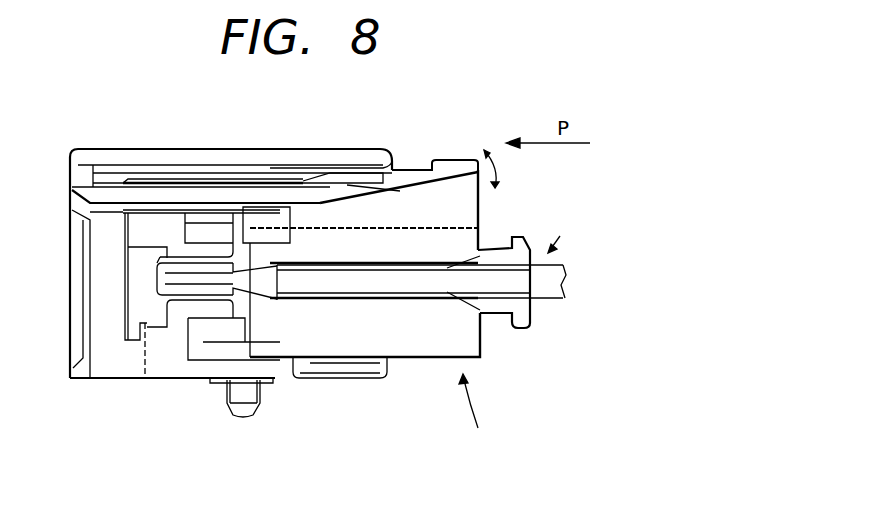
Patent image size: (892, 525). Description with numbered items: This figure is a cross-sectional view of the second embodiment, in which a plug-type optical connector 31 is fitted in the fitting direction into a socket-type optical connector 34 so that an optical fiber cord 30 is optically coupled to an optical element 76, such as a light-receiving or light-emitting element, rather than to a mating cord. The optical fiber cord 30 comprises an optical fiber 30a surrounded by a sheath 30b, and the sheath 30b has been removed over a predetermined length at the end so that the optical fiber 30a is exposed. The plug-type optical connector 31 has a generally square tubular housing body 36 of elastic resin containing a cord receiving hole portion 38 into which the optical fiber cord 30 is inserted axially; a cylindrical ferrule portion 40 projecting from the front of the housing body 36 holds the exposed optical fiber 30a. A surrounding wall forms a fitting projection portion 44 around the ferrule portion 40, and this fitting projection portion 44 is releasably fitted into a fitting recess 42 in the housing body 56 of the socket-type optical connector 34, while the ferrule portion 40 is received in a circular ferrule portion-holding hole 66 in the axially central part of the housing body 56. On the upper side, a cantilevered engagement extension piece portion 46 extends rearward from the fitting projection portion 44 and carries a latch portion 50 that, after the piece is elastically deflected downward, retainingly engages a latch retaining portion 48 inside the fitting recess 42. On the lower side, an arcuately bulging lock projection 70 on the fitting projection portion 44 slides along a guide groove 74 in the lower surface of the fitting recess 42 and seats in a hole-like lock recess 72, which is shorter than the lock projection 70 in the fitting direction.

The socket-type optical connector 34 is at (121, 141).
The housing body 56 is at (146, 150).
The fitting projection portion 44 is at (196, 190).
The fitting recess 42 is at (250, 192).
The latch portion 50 is at (315, 155).
The engagement extension piece portion 46 is at (455, 158).
The latch retaining portion 48 is at (368, 193).
The housing body 36 is at (418, 370).
The cord receiving hole portion 38 is at (496, 342).
The optical fiber cord 30 is at (572, 228).
The sheath 30b is at (548, 300).
The optical fiber 30a is at (247, 420).
The plug-type optical connector 31 is at (483, 410).
The ferrule portion 40 is at (140, 362).
The ferrule portion-holding hole 66 is at (203, 320).
The lock projection 70 is at (289, 372).
The lock recess 72 is at (248, 268).
The guide groove 74 is at (350, 348).
The optical element 76 is at (140, 316).